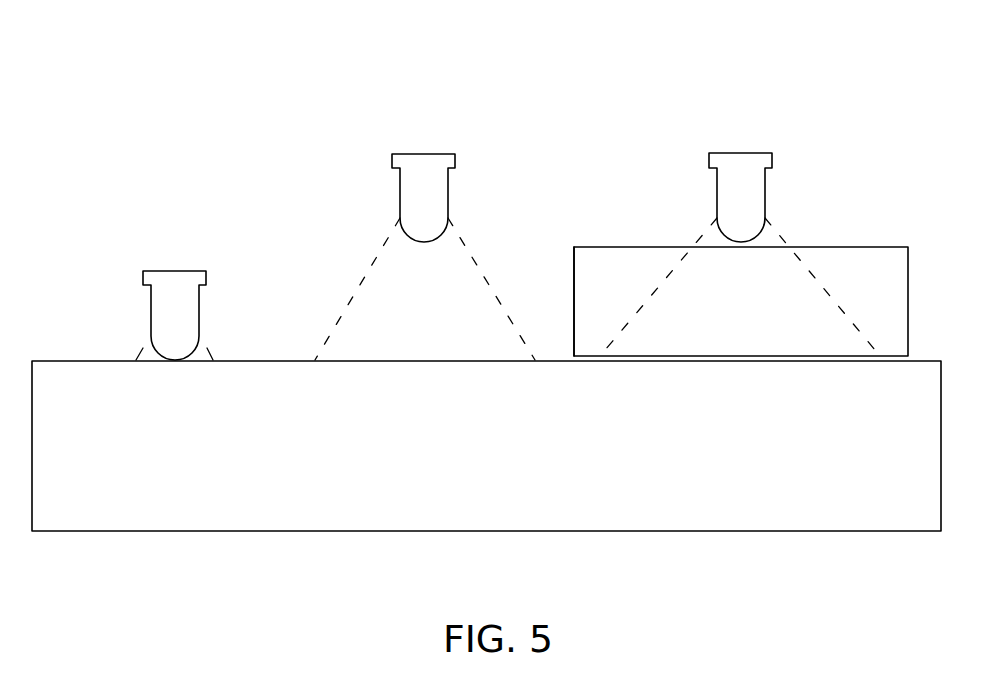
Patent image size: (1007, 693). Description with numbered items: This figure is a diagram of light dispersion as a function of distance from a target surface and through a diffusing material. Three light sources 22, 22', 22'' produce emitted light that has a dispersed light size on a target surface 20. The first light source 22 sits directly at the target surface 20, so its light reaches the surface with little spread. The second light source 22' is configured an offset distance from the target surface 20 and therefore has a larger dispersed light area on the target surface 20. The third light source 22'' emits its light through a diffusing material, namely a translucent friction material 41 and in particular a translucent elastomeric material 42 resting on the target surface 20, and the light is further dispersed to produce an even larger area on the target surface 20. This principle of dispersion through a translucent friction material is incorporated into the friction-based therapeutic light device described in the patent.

The target surface 20 is at (247, 360).
The light source 22 is at (170, 253).
The light source 22' is at (425, 190).
The light source 22'' is at (740, 193).
The translucent friction material 41 is at (633, 268).
The translucent elastomeric material 42 is at (592, 278).